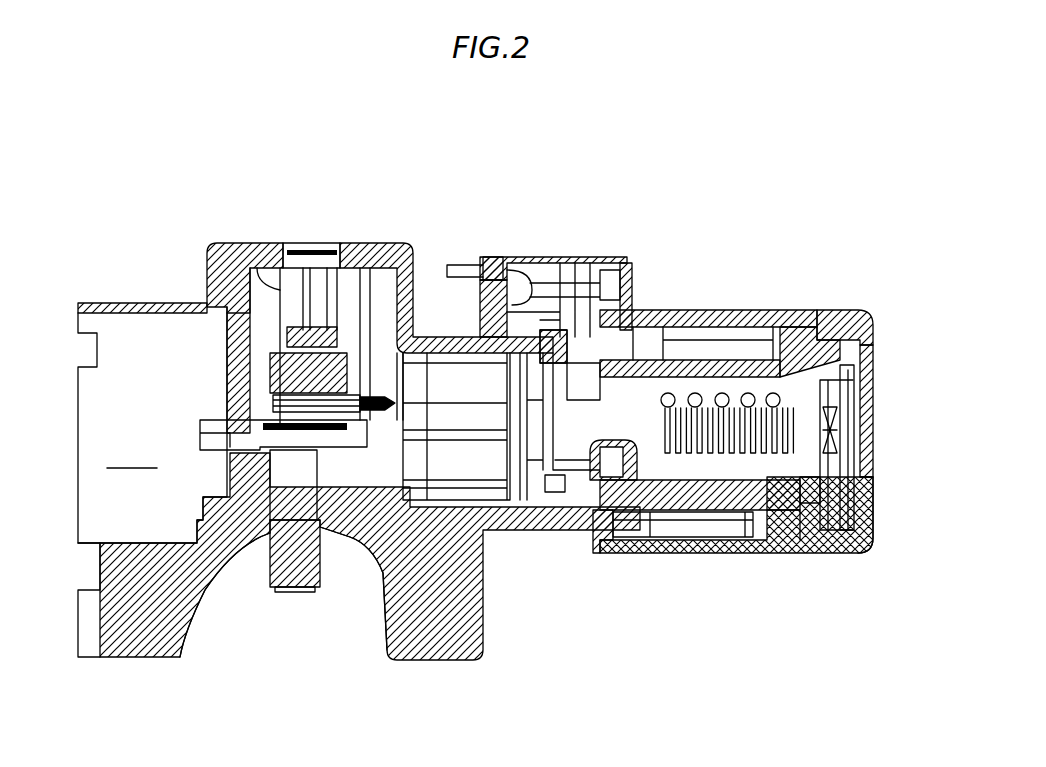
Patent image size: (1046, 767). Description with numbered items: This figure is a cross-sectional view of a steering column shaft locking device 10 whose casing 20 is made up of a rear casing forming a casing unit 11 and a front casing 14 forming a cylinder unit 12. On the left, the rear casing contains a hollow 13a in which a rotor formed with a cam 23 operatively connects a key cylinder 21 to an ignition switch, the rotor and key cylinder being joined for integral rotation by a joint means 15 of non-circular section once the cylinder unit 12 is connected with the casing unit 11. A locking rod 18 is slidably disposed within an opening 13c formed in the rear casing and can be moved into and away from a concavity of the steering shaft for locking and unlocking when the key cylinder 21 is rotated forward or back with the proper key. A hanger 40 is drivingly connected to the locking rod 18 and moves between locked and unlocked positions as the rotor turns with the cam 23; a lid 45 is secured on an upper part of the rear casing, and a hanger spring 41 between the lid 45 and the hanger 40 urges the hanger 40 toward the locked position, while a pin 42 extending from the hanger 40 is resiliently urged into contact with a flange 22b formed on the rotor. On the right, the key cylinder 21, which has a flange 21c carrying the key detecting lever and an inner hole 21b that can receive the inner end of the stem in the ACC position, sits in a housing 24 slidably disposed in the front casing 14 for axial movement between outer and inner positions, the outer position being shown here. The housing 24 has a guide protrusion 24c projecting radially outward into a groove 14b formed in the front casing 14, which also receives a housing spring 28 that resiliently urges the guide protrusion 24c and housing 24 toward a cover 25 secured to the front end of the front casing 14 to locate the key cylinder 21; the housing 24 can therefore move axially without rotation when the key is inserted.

The steering column shaft locking device 10 is at (192, 212).
The casing unit 11 is at (384, 238).
The cylinder unit 12 is at (839, 298).
The hollow 13a is at (359, 464).
The opening 13c is at (340, 535).
The front casing 14 is at (873, 372).
The groove 14b is at (778, 553).
The joint means 15 is at (575, 525).
The locking rod 18 is at (280, 592).
The casing 20 is at (168, 303).
The key cylinder 21 is at (707, 393).
The inner hole 21b is at (567, 418).
The flange 21c is at (866, 546).
The flange 22b is at (477, 532).
The cam 23 is at (385, 573).
The housing 24 is at (772, 320).
The guide protrusion 24c is at (828, 550).
The cover 25 is at (868, 318).
The housing spring 28 is at (683, 553).
The hanger 40 is at (240, 372).
The hanger spring 41 is at (258, 245).
The pin 42 is at (416, 330).
The lid 45 is at (343, 245).